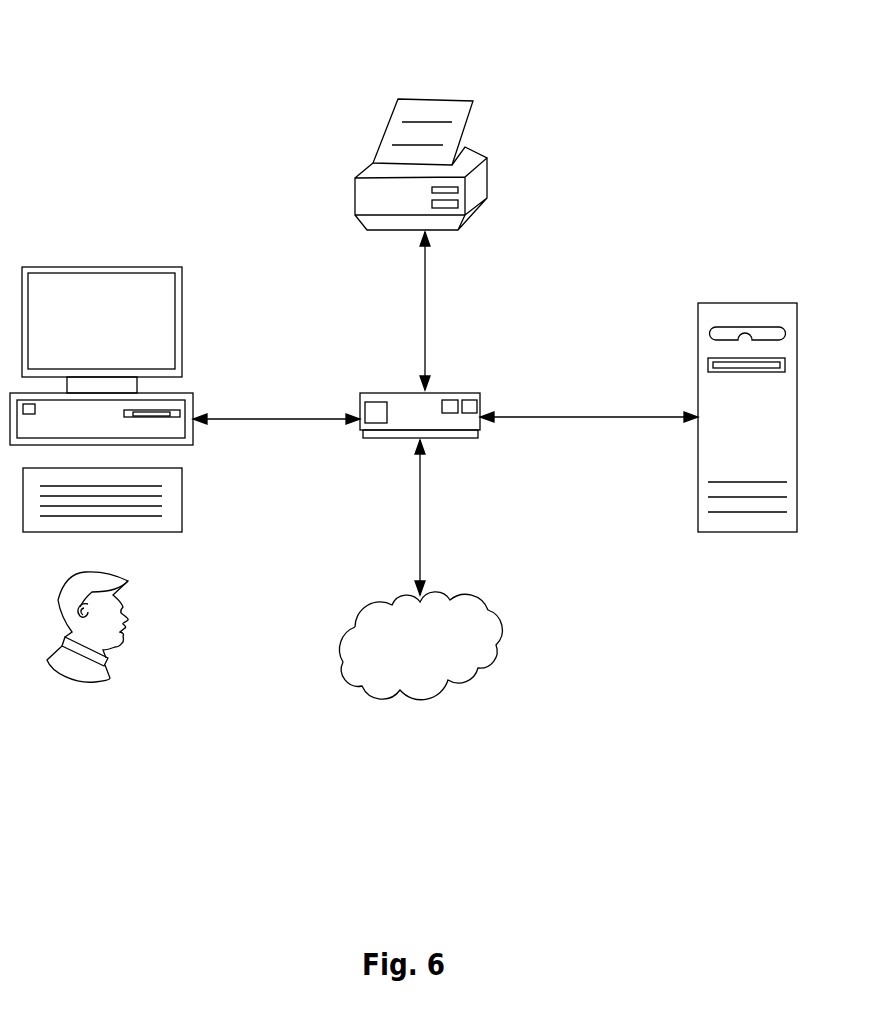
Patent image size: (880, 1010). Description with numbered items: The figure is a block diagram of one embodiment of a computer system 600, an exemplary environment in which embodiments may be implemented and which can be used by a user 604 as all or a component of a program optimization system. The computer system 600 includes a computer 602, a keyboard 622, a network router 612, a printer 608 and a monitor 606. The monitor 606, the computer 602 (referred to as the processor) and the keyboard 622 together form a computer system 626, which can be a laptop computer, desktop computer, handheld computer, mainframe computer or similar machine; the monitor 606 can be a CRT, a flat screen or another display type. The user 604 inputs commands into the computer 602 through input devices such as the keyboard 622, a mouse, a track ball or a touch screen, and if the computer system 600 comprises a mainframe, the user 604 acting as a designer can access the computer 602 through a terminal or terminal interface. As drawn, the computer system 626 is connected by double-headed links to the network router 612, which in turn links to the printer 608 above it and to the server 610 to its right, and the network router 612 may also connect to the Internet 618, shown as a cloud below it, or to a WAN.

The computer system 600 is at (670, 68).
The computer 602 is at (193, 395).
The user 604 is at (127, 590).
The monitor 606 is at (183, 267).
The printer 608 is at (353, 205).
The server 610 is at (698, 513).
The network router 612 is at (453, 393).
The Internet 618 is at (487, 610).
The keyboard 622 is at (182, 503).
The computer system 626 is at (197, 321).